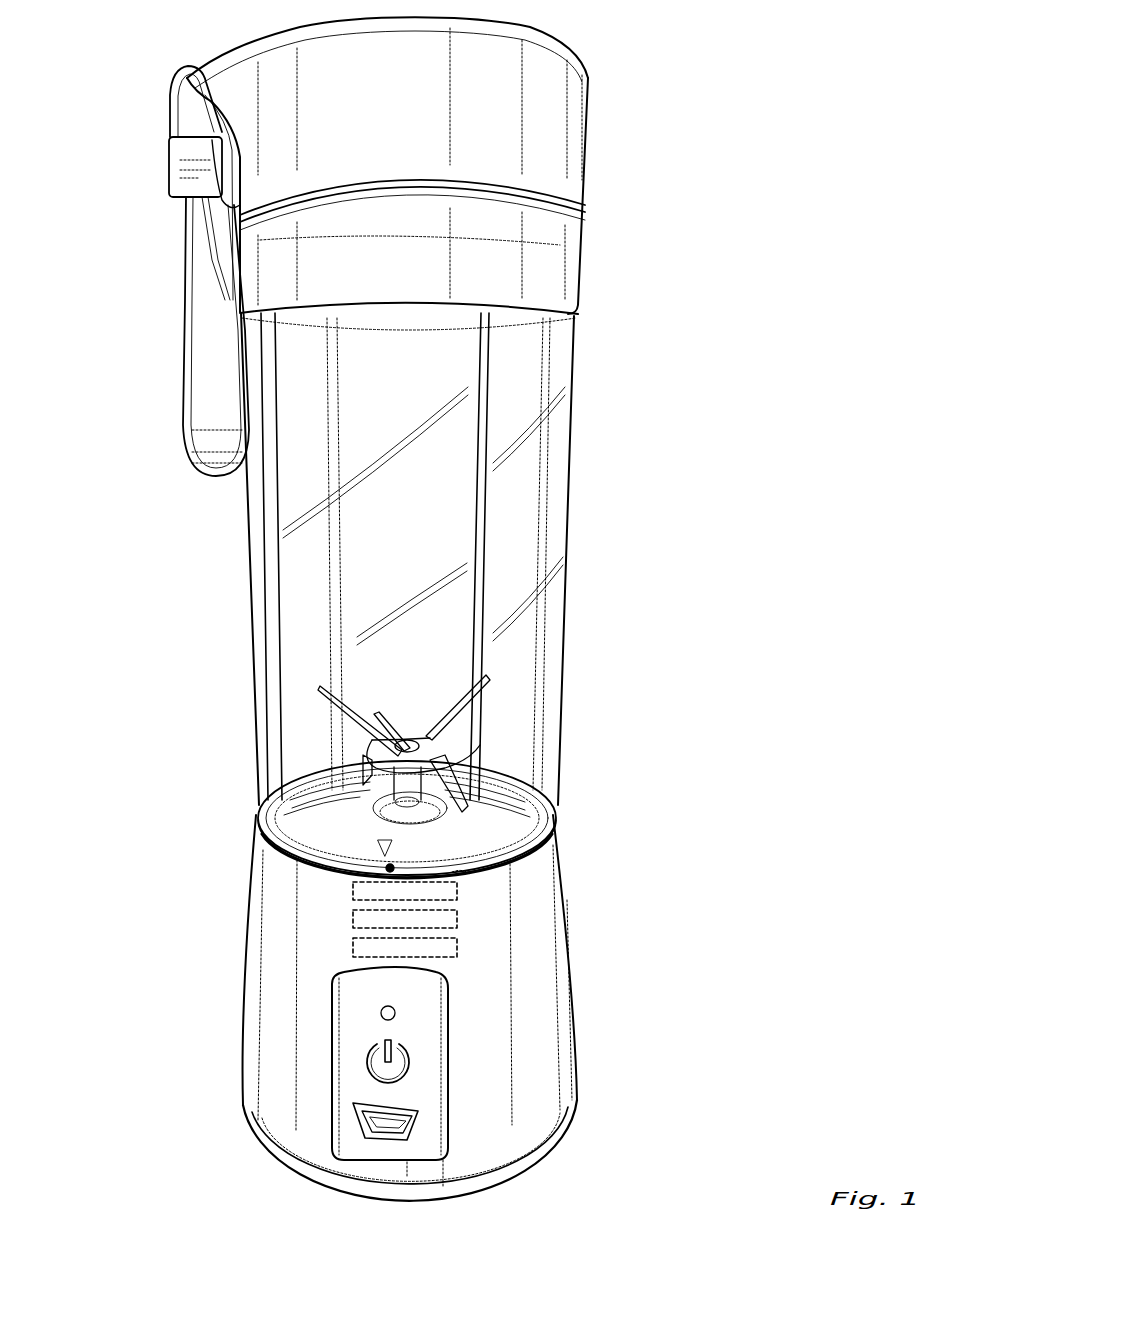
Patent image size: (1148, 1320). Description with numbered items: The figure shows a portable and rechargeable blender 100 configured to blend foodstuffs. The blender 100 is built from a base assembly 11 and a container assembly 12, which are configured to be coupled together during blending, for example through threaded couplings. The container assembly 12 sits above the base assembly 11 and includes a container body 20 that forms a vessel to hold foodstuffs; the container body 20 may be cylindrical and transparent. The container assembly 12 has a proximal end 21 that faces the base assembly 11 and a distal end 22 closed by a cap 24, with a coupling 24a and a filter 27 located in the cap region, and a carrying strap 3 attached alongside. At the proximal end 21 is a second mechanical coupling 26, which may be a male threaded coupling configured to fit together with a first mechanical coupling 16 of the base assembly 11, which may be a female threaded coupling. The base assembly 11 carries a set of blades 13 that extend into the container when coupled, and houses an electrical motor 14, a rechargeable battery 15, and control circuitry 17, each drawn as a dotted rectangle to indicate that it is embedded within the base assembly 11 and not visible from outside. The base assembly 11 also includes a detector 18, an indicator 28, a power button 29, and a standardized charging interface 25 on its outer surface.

The portable and rechargeable blender 100 is at (857, 126).
The container assembly 12 is at (740, 830).
The base assembly 11 is at (740, 1225).
The carrying strap 3 is at (230, 521).
The distal end 22 is at (750, 150).
The cap 24 is at (560, 170).
The coupling 24a is at (750, 228).
The filter 27 is at (700, 278).
The container body 20 is at (560, 645).
The proximal end 21 is at (730, 733).
The first mechanical coupling 16 is at (742, 810).
The second mechanical coupling 26 is at (547, 836).
The set of blades 13 is at (317, 690).
The electrical motor 14 is at (367, 893).
The control circuitry 17 is at (363, 922).
The rechargeable battery 15 is at (380, 948).
The detector 18 is at (460, 877).
The indicator 28 is at (396, 1008).
The power button 29 is at (367, 1065).
The standardized charging interface 25 is at (357, 1107).